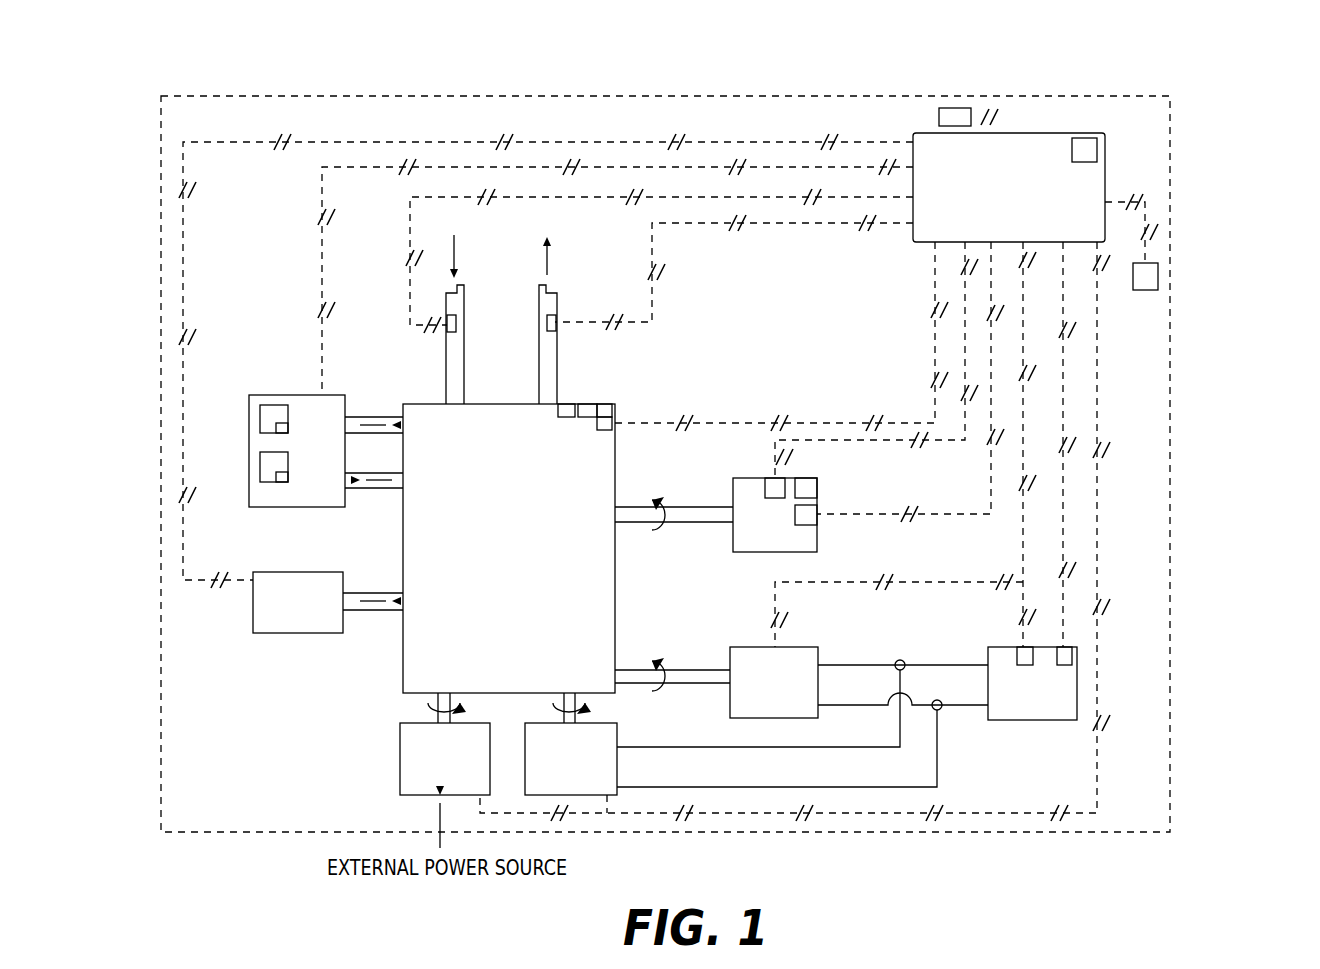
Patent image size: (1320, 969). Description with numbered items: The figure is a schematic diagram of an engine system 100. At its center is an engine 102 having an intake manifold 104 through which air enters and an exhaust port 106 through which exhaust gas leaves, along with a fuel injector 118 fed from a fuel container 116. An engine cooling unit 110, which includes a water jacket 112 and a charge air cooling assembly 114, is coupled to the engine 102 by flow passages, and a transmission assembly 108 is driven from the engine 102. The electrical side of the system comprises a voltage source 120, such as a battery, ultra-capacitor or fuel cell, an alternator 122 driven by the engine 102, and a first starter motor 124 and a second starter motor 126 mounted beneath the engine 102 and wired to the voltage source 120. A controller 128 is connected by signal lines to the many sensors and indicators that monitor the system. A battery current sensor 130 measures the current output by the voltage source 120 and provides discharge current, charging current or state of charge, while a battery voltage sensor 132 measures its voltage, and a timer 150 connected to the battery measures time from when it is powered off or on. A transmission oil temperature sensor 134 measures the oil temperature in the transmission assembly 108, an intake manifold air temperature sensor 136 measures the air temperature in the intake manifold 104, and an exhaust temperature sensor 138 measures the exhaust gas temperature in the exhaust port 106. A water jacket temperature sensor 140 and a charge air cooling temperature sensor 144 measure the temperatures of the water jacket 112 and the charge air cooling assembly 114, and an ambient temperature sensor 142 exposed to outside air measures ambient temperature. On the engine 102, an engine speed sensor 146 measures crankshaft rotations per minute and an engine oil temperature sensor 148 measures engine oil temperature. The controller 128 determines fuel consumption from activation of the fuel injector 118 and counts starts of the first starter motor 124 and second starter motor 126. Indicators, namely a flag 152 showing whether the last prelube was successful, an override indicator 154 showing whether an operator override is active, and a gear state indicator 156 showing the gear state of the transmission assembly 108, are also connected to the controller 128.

The engine system 100 is at (1212, 175).
The engine 102 is at (524, 559).
The intake manifold 104 is at (446, 368).
The exhaust port 106 is at (557, 364).
The transmission assembly 108 is at (791, 527).
The engine cooling unit 110 is at (265, 395).
The water jacket 112 is at (262, 416).
The charge air cooling (CAC) assembly 114 is at (262, 468).
The fuel container 116 is at (314, 612).
The fuel injector 118 is at (566, 420).
The voltage source 120 is at (1048, 696).
The alternator 122 is at (791, 694).
The first starter motor 124 is at (461, 772).
The second starter motor 126 is at (586, 772).
The controller 128 is at (1024, 207).
The battery current sensor 130 is at (1065, 648).
The battery voltage sensor 132 is at (1024, 652).
The transmission oil temperature sensor 134 is at (815, 520).
The intake manifold air temperature (IMAT) sensor 136 is at (456, 322).
The exhaust temperature sensor 138 is at (553, 312).
The water jacket temperature sensor 140 is at (290, 427).
The ambient temperature sensor 142 is at (1158, 272).
The charge air cooling (CAC) temperature sensor 144 is at (288, 478).
The engine speed sensor 146 is at (605, 404).
The engine oil temperature sensor 148 is at (587, 420).
The timer 150 is at (1085, 138).
The flag 152 is at (773, 478).
The override indicator 154 is at (950, 108).
The gear state indicator 156 is at (817, 488).